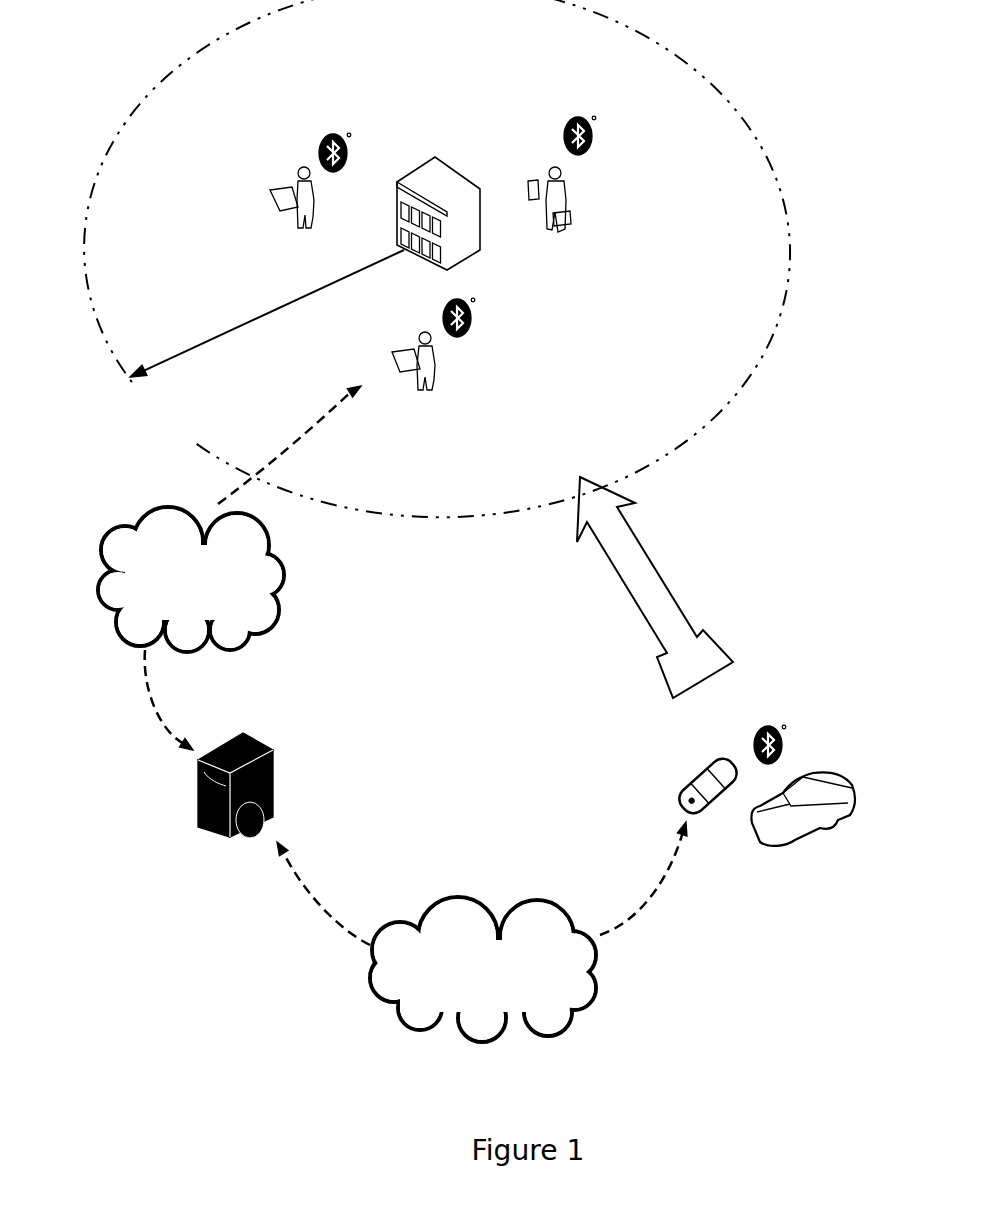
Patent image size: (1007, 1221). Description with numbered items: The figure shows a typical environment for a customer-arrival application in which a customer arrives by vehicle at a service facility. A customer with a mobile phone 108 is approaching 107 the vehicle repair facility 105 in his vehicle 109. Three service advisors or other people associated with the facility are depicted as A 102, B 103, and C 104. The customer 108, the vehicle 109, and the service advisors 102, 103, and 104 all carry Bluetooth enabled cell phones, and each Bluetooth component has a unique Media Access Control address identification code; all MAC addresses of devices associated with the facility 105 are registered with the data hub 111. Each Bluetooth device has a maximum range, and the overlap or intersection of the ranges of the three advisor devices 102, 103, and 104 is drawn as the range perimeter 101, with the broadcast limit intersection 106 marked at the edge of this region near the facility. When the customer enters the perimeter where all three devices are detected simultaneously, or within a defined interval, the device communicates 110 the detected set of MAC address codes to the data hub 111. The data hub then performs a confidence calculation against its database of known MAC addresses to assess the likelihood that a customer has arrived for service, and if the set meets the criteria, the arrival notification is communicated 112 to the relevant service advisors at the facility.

The range perimeter 101 is at (676, 58).
The service advisor A 102 is at (307, 137).
The service advisor B 103 is at (447, 377).
The service advisor C 104 is at (547, 130).
The vehicle repair facility 105 is at (478, 256).
The broadcast limit intersection of A B and C 106 is at (127, 357).
The approaching 107 is at (632, 560).
The customer (mobile phone) 108 is at (724, 747).
The vehicle 109 is at (847, 838).
The communication of MAC address codes 110 is at (537, 898).
The data hub 111 is at (220, 837).
The arrival notification communication 112 is at (100, 583).